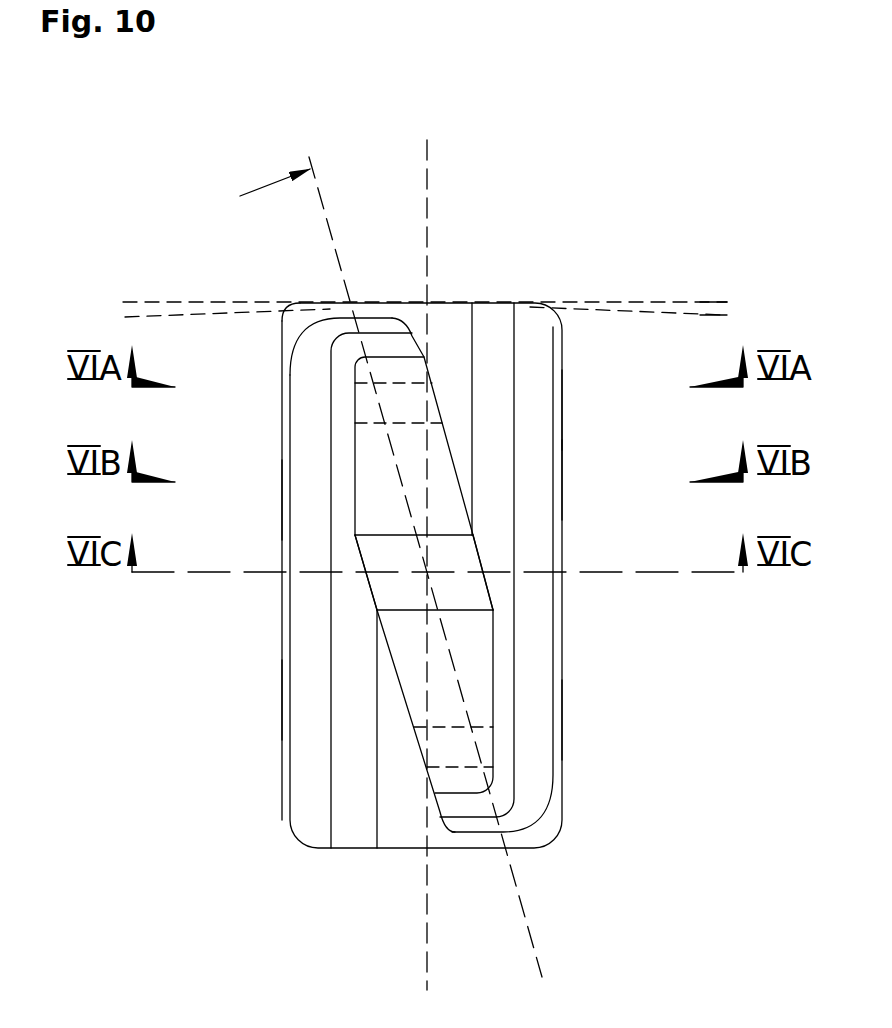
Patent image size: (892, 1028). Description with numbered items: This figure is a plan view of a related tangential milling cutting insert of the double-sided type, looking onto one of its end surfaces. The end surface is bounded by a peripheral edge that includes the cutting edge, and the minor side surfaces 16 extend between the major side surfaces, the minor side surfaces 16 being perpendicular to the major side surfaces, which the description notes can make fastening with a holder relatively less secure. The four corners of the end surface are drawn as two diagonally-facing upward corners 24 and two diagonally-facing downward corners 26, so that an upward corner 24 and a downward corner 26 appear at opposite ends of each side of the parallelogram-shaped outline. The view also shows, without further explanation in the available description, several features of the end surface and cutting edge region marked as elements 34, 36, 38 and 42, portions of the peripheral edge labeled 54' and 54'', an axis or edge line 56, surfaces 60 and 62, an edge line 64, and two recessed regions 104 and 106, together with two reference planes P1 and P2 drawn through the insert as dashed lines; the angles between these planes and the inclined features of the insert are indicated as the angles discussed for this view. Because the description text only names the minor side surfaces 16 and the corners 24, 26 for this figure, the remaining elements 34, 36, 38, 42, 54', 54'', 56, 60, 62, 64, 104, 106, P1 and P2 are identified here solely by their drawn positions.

The minor side surface 16 is at (487, 252).
The upward corner 24 is at (281, 317).
The downward corner 26 is at (568, 323).
The central land 34 is at (380, 562).
The inclined edge 36 is at (385, 672).
The cutting edge 38 is at (396, 357).
The end surface 42 is at (563, 477).
The flank portion 54' is at (486, 604).
The flank portion 54'' is at (420, 555).
The cutting edge axis 56 is at (331, 303).
The chip surface 60 is at (310, 413).
The chip surface 62 is at (355, 755).
The edge line 64 is at (463, 363).
The recess 104 is at (363, 407).
The recess 106 is at (457, 747).
The plane P1 is at (637, 572).
The plane P2 is at (427, 253).